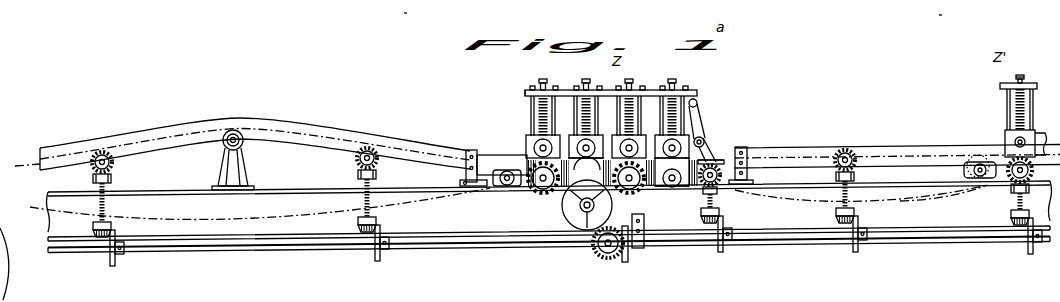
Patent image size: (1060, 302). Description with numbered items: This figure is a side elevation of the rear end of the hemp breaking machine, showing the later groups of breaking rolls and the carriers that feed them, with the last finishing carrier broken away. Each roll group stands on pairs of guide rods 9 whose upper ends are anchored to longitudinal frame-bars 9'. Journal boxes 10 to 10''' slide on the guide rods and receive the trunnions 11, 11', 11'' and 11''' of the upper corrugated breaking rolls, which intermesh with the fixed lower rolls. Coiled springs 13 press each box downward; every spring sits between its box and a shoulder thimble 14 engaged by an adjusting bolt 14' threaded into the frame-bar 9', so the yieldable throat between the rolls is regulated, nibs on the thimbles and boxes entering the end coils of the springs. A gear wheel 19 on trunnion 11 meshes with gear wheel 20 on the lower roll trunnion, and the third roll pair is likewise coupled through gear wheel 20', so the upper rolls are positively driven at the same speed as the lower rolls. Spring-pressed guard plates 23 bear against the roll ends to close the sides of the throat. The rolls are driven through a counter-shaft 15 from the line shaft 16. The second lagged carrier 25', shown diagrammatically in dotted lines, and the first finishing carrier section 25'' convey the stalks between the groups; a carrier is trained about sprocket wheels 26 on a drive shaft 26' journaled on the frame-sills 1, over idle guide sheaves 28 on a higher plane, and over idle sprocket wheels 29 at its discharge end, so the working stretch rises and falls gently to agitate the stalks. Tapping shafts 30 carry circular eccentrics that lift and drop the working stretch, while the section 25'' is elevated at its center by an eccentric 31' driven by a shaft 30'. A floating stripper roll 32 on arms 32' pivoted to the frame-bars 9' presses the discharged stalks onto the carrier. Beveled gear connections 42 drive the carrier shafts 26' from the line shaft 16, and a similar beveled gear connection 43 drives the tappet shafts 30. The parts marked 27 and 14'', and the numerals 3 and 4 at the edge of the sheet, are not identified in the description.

The frame-sills 1 is at (288, 214).
The frame (adjacent figure fragment) 3 is at (944, 9).
The shaft (adjacent figure fragment) 4 is at (409, 7).
The guide rods 9 is at (776, 96).
The frame-bars 9' is at (510, 92).
The journal box 10 is at (716, 86).
The journal box 10''' is at (732, 138).
The trunnion 11 is at (353, 219).
The trunnion 11' is at (352, 106).
The trunnion 11'' is at (616, 159).
The trunnion 11''' is at (723, 171).
The coiled springs 13 is at (537, 118).
The shoulder thimble 14 is at (847, 109).
The adjusting bolt 14' is at (803, 67).
The screw head 14'' is at (1038, 65).
The counter-shaft 15 is at (608, 262).
The line shaft 16 is at (445, 256).
The toothed gear wheel 19 is at (549, 140).
The gear wheel 20 is at (525, 197).
The gear wheel 20' is at (657, 214).
The guard plates 23 is at (480, 152).
The second lagged carrier 25' is at (250, 176).
The first section of finishing carrier 25'' is at (943, 204).
The sprocket wheels 26 is at (861, 196).
The drive shaft 26' is at (759, 165).
The arm 27 is at (281, 132).
The idle guide sheaves 28 is at (245, 148).
The idle sprocket wheels 29 is at (497, 188).
The tapping shafts 30 is at (562, 148).
The shaft 30' is at (872, 182).
The eccentric 31' is at (935, 184).
The floating roll 32 is at (728, 131).
The arms 32' is at (717, 125).
The beveled gear connections 42 is at (728, 214).
The beveled gear connection 43 is at (113, 183).